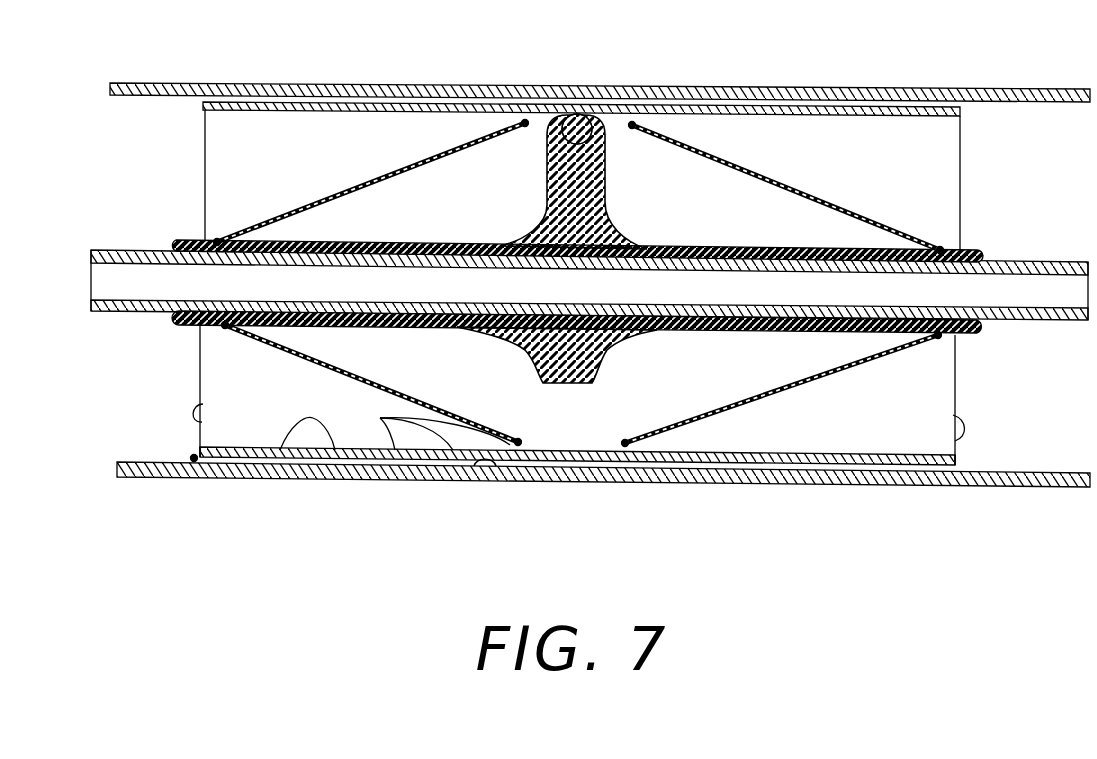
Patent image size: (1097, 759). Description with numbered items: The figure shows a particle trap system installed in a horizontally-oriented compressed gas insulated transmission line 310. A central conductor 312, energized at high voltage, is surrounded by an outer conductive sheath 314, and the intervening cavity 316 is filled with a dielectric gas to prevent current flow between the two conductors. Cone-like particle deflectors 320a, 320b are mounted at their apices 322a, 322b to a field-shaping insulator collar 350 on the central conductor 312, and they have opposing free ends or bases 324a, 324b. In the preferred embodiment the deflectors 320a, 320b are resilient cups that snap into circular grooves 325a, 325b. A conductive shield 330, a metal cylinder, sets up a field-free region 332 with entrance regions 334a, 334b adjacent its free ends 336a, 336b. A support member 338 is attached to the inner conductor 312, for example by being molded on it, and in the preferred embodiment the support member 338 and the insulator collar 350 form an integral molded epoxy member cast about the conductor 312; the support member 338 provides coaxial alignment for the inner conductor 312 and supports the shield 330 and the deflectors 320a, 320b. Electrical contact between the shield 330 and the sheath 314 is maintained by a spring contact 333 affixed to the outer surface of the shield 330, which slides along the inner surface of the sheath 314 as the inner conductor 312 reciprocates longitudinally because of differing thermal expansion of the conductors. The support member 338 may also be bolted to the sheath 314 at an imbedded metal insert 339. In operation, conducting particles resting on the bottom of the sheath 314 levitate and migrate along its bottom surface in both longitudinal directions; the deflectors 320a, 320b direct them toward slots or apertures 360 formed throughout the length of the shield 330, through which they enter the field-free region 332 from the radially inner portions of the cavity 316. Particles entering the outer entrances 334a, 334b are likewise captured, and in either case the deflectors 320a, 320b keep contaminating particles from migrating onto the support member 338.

The gas insulated transmission line 310 is at (797, 73).
The central conductor 312 is at (574, 296).
The outer conductive sheath 314 is at (1015, 486).
The cavity 316 is at (122, 423).
The particle deflector 320a is at (300, 208).
The particle deflector 320b is at (809, 193).
The apex 322a is at (215, 242).
The apex 322b is at (944, 249).
The free end or base 324a is at (524, 121).
The free end or base 324b is at (635, 122).
The circular groove 325a is at (227, 324).
The circular groove 325b is at (947, 337).
The conductive shield 330 is at (940, 143).
The field-free region 332 is at (737, 465).
The spring contact 333 is at (478, 463).
The entrance region 334a is at (212, 460).
The entrance region 334b is at (948, 468).
The free end 336a is at (203, 404).
The free end 336b is at (953, 415).
The support member 338 is at (604, 170).
The imbedded metal insert 339 is at (583, 113).
The field-shaping insulator collar 350 is at (432, 241).
The apertures 360 is at (380, 418).